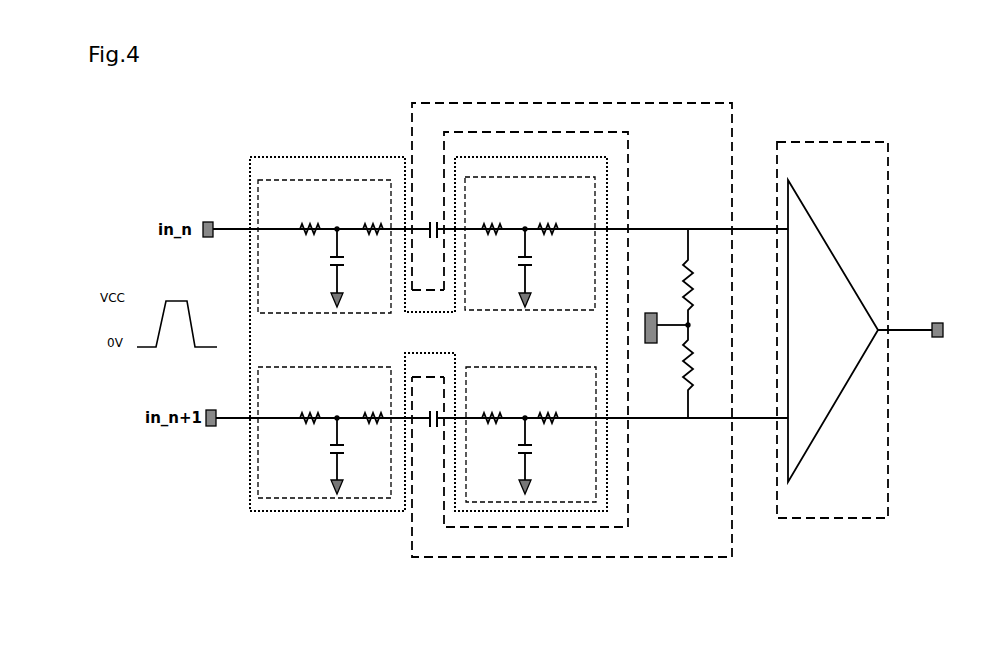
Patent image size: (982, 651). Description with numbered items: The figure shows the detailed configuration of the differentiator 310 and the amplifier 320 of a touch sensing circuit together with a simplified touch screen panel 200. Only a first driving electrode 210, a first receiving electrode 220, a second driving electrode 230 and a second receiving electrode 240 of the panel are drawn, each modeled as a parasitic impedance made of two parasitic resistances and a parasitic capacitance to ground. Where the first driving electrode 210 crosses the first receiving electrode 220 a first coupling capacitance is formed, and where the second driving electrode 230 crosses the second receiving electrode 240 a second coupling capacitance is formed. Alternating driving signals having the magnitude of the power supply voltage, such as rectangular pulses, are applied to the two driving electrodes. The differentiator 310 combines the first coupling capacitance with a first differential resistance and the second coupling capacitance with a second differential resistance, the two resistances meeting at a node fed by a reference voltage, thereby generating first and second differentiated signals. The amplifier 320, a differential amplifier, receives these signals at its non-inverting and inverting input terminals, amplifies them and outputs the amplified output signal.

The touch screen panel 200 is at (380, 511).
The first driving electrode 210 is at (259, 293).
The first receiving electrode 220 is at (465, 293).
The second driving electrode 230 is at (258, 476).
The second receiving electrode 240 is at (466, 477).
The differentiator 310 is at (632, 557).
The amplifier 320 is at (800, 518).